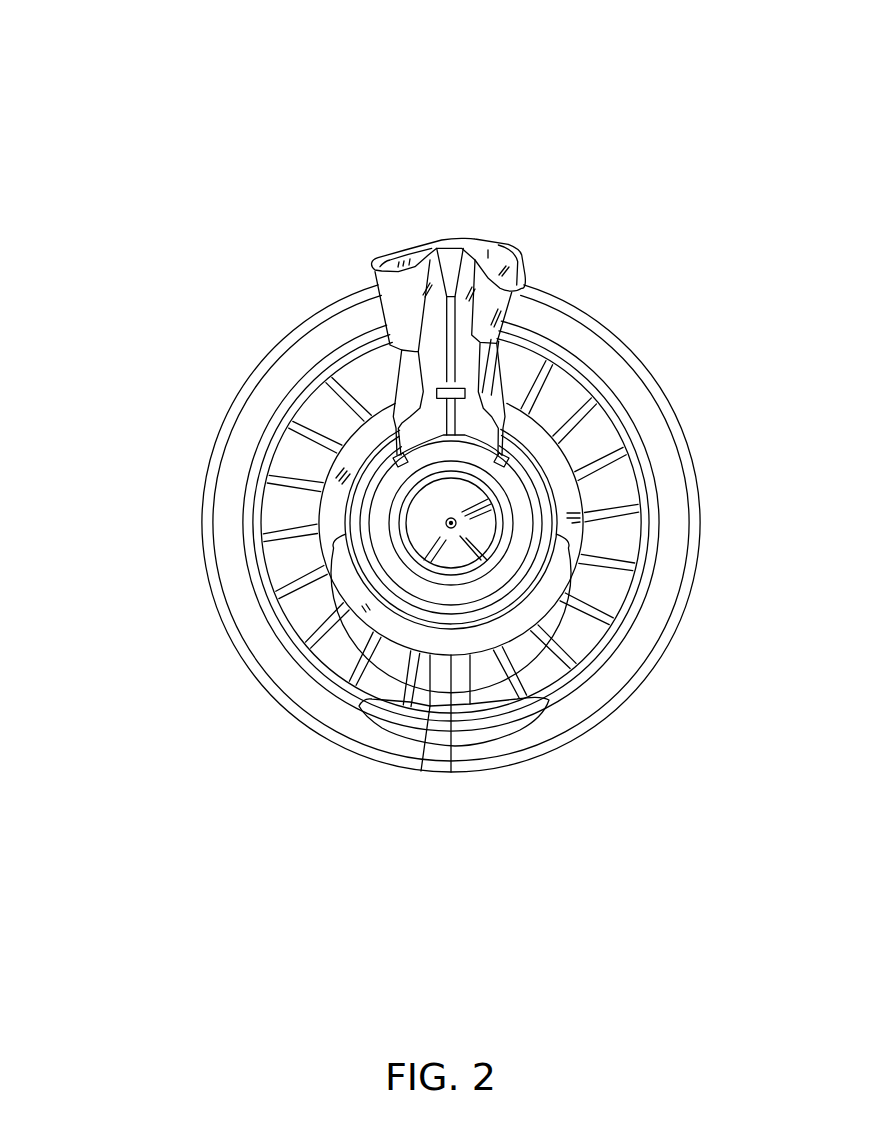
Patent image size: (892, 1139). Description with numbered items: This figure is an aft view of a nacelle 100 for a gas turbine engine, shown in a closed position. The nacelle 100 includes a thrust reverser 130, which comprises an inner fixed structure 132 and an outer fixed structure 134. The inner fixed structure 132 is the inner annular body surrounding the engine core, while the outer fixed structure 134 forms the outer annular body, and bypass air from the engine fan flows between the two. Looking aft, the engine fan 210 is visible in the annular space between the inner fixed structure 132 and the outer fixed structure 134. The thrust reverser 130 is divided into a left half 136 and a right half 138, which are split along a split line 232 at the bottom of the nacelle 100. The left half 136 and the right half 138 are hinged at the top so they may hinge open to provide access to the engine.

The nacelle 100 is at (622, 189).
The thrust reverser 130 is at (240, 552).
The inner fixed structure 132 is at (535, 437).
The outer fixed structure 134 is at (628, 460).
The left half 136 is at (263, 673).
The right half 138 is at (608, 707).
The engine fan 210 is at (612, 600).
The split line 232 is at (453, 730).